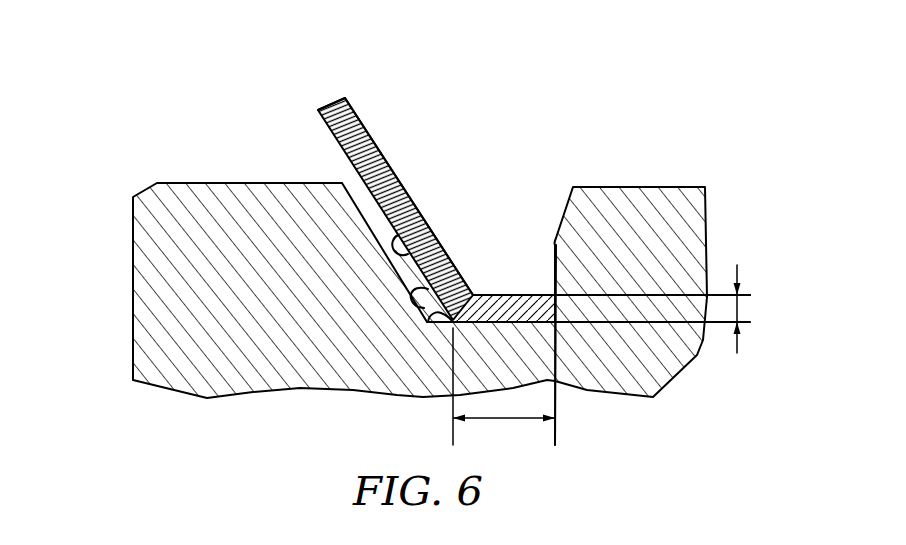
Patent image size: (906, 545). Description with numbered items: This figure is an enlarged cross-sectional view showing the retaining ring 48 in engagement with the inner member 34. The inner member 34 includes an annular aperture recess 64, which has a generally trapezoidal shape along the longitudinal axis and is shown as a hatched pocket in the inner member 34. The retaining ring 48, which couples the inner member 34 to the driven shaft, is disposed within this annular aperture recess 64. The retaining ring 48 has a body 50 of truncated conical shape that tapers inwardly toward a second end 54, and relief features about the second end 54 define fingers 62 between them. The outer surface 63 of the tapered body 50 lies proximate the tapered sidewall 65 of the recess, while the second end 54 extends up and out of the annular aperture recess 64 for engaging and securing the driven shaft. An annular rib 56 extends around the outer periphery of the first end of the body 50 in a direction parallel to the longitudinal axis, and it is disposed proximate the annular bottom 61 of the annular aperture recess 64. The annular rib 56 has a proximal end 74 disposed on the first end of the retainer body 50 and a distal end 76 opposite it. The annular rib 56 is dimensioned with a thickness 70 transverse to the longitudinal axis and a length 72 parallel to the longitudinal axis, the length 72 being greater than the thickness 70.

The inner member 34 is at (153, 275).
The retaining ring 48 is at (412, 186).
The body 50 is at (397, 233).
The second end 54 is at (330, 107).
The annular rib 56 is at (538, 294).
The annular bottom 61 is at (432, 313).
The fingers 62 is at (373, 143).
The outer surface 63 is at (409, 252).
The annular aperture recess 64 is at (556, 245).
The tapered sidewall 65 is at (427, 307).
The thickness 70 is at (737, 308).
The length 72 is at (515, 418).
The proximal end 74 is at (473, 295).
The distal end 76 is at (557, 302).